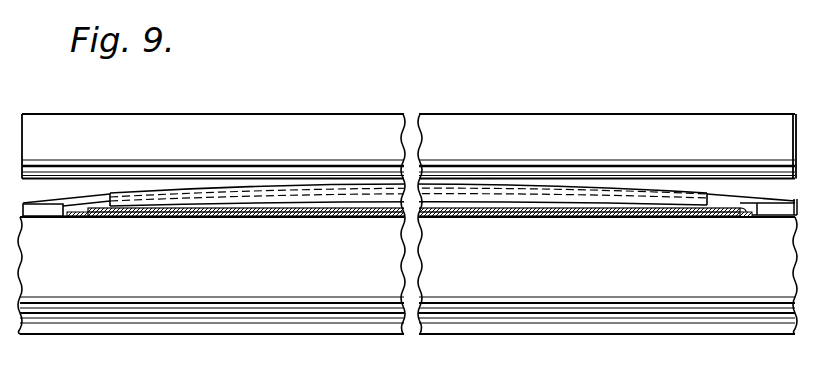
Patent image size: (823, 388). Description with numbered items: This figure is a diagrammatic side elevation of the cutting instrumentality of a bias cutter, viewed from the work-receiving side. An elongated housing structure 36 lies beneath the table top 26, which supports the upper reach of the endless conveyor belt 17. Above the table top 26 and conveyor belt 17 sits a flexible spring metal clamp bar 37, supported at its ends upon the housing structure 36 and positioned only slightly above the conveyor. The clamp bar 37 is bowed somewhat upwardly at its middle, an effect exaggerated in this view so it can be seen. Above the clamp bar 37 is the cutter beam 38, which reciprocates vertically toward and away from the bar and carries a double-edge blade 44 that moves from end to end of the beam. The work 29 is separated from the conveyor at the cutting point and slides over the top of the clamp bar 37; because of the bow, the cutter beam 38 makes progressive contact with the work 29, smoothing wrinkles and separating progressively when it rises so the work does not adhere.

The cutter beam 38 is at (276, 119).
The elongated housing structure 36 is at (209, 331).
The work 29 is at (612, 207).
The table top 26 is at (72, 218).
The clamp bar 37 is at (60, 196).
The double-edge blade 44 is at (96, 184).
The endless conveyor belt 17 is at (730, 213).